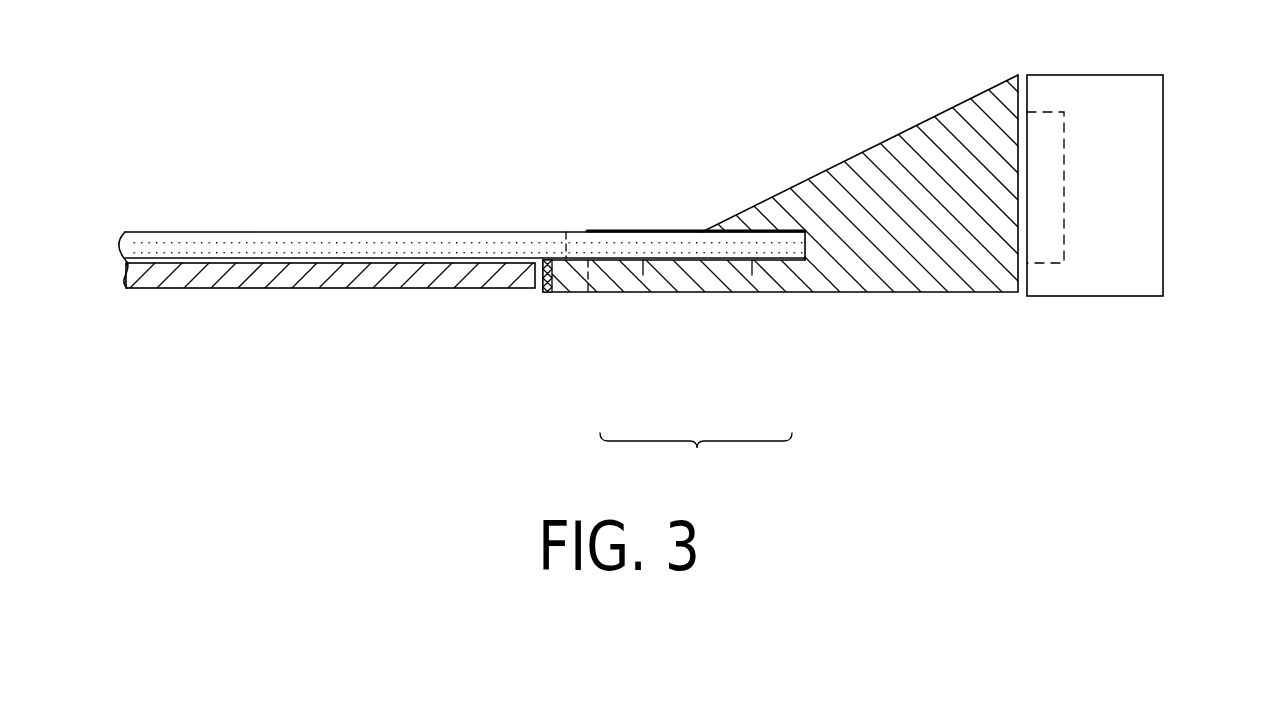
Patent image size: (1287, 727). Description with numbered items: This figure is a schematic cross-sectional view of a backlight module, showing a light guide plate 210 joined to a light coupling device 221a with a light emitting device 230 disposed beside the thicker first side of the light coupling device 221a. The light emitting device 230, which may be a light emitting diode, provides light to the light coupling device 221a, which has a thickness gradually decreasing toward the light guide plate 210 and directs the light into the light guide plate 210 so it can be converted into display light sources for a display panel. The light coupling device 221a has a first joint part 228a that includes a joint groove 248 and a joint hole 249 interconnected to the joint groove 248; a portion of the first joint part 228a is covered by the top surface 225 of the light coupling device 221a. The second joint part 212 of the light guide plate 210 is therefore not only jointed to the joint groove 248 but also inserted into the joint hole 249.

The light guide plate 210 is at (230, 247).
The second joint part 212 is at (622, 250).
The light coupling device 221a is at (923, 282).
The top surface 225 is at (845, 159).
The light emitting device 230 is at (1150, 189).
The joint groove 248 is at (643, 272).
The joint hole 249 is at (752, 272).
The first joint part 228a is at (696, 467).